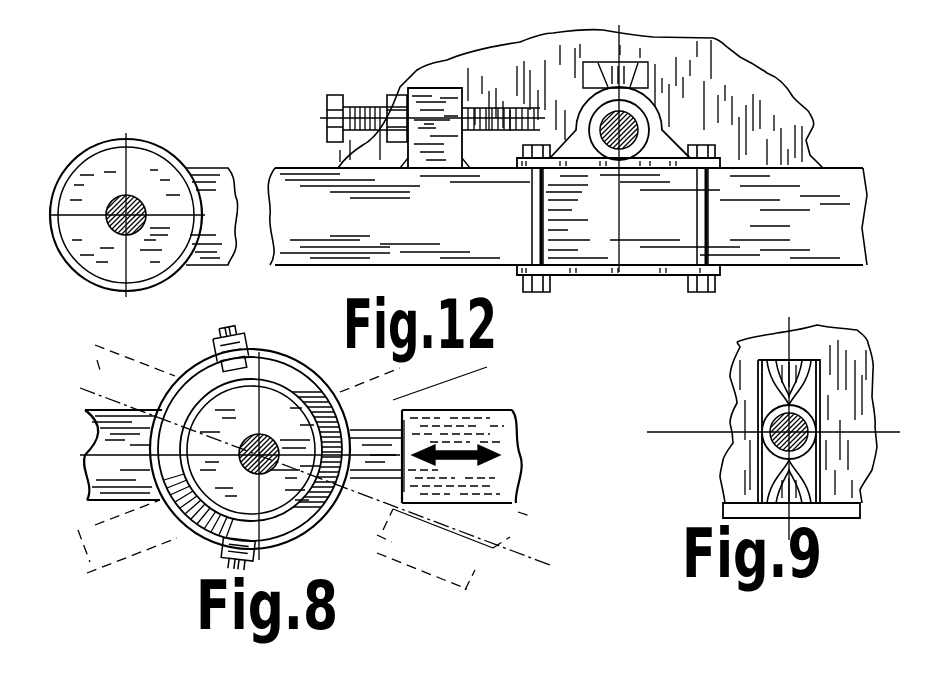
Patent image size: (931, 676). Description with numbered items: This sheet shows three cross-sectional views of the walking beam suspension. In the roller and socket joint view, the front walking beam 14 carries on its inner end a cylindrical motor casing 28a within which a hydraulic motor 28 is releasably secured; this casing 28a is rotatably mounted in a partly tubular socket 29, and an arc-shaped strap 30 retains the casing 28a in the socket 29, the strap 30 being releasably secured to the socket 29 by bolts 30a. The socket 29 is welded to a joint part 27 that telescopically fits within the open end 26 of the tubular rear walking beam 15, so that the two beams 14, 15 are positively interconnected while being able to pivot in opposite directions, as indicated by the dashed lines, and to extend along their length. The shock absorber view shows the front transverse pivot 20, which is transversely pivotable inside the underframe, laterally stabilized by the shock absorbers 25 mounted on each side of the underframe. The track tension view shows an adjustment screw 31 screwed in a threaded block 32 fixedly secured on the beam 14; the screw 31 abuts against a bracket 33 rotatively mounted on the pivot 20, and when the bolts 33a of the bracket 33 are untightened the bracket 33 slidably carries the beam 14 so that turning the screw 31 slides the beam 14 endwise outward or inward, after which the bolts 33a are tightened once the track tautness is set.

In FIG. 12, the front walking beam 14 is at (287, 185).
In FIG. 8, the rear walking beam 15 is at (497, 402).
In FIG. 12, the front transverse pivot 20 is at (677, 117).
In FIG. 9, the front transverse pivot 20 is at (770, 425).
In FIG. 12, the shock absorber 25 is at (645, 66).
In FIG. 9, the shock absorber 25 is at (758, 359).
In FIG. 8, the open end 26 is at (401, 418).
In FIG. 8, the joint part 27 is at (365, 438).
In FIG. 12, the hydraulic motor 28 is at (138, 157).
In FIG. 8, the hydraulic motor 28 is at (277, 408).
In FIG. 12, the motor casing 28a is at (93, 152).
In FIG. 8, the motor casing 28a is at (170, 392).
In FIG. 8, the socket 29 is at (302, 378).
In FIG. 8, the strap 30 is at (195, 380).
In FIG. 8, the bolts 30a is at (222, 345).
In FIG. 12, the adjustment screw 31 is at (360, 97).
In FIG. 12, the threaded block 32 is at (435, 88).
In FIG. 12, the bracket 33 is at (545, 38).
In FIG. 12, the bolts 33a is at (697, 235).